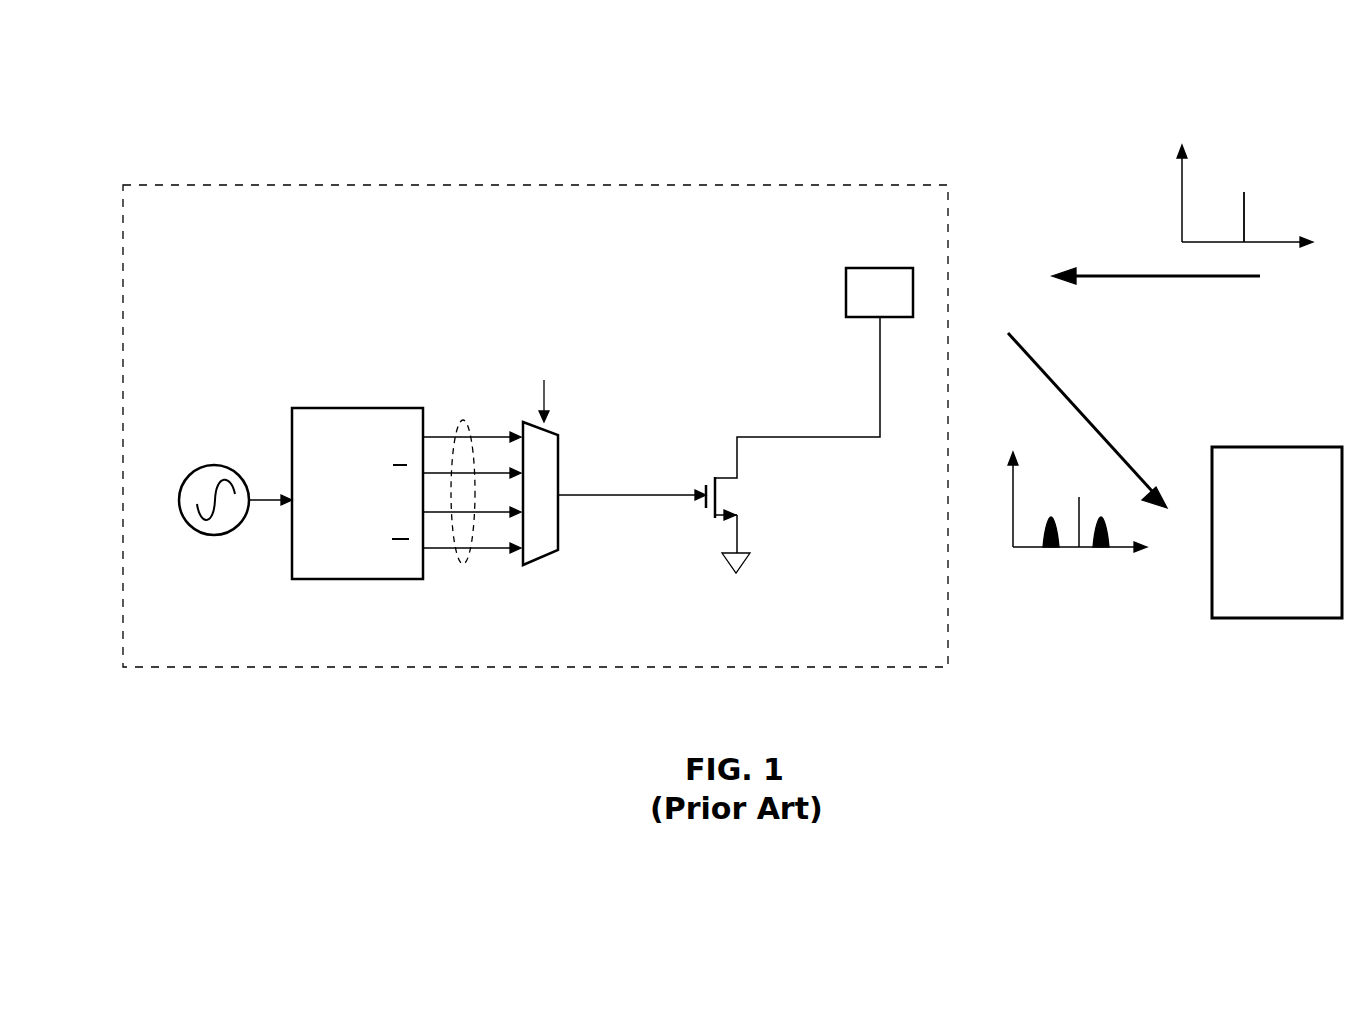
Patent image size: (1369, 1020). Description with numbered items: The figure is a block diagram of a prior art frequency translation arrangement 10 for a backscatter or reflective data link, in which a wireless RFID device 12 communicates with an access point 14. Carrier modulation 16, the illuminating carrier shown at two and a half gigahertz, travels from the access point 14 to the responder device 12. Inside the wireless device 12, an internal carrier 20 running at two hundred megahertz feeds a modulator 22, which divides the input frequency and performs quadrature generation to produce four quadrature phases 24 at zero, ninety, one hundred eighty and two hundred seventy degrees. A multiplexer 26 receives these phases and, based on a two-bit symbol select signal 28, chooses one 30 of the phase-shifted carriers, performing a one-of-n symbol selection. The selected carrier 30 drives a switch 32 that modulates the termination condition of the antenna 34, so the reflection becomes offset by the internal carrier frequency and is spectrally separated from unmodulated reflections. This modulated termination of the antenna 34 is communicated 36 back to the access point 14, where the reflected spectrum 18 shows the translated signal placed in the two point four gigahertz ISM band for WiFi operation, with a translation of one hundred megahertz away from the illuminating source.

The backscatter communication system 10 is at (132, 90).
The wireless device 12 is at (680, 183).
The access point 14 is at (1248, 447).
The carrier modulation 16 is at (1258, 216).
The modulated backscatter signal (2.4G/2.6G) 18 is at (1074, 620).
The internal carrier 20 is at (212, 465).
The modulator 22 is at (345, 408).
The quadrature phases 24 is at (456, 566).
The multiplexer 26 is at (560, 535).
The 2b symbol select signal 28 is at (530, 325).
The selected phase-shifted carrier 30 is at (615, 495).
The switch 32 is at (750, 517).
The antenna 34 is at (846, 298).
The communicating 36 is at (1075, 402).